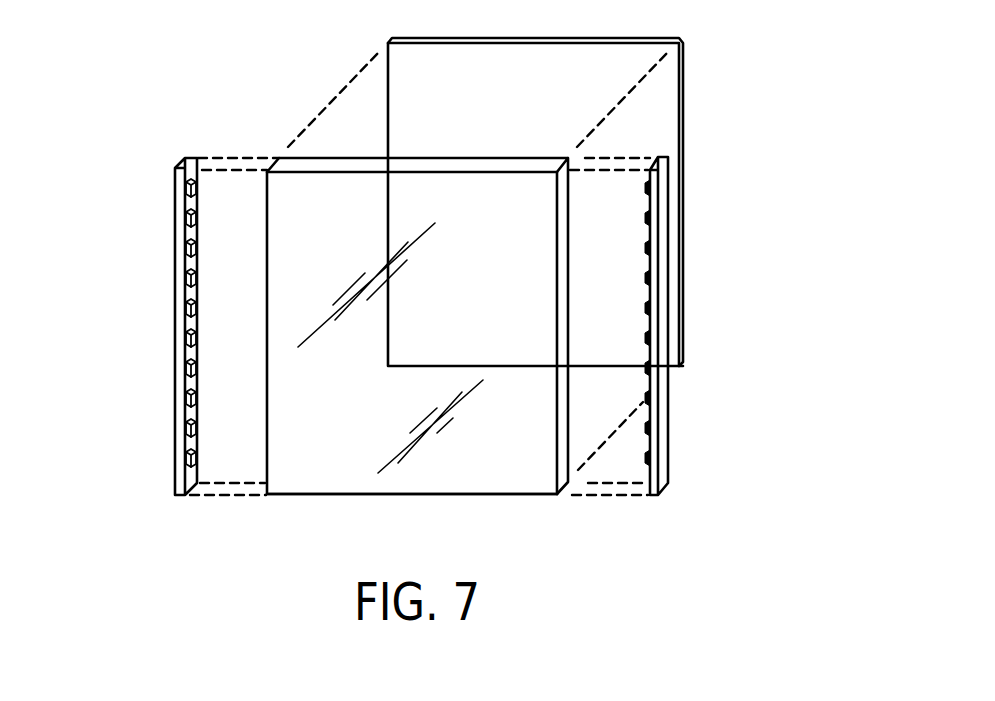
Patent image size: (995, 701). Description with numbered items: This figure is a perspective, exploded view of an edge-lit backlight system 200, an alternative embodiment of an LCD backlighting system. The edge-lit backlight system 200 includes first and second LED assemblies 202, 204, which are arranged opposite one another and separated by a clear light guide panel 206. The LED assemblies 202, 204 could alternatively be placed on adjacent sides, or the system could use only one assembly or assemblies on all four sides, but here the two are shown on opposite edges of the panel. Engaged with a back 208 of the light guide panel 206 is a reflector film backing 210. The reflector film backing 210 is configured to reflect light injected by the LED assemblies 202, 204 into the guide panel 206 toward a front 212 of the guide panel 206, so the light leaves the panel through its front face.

The edge-lit backlight system 200 is at (755, 464).
The first LED assembly 202 is at (672, 256).
The second LED assembly 204 is at (145, 242).
The light guide panel 206 is at (494, 310).
The back of the light guide panel 208 is at (457, 155).
The reflector film backing 210 is at (688, 96).
The front of the light guide panel 212 is at (337, 500).